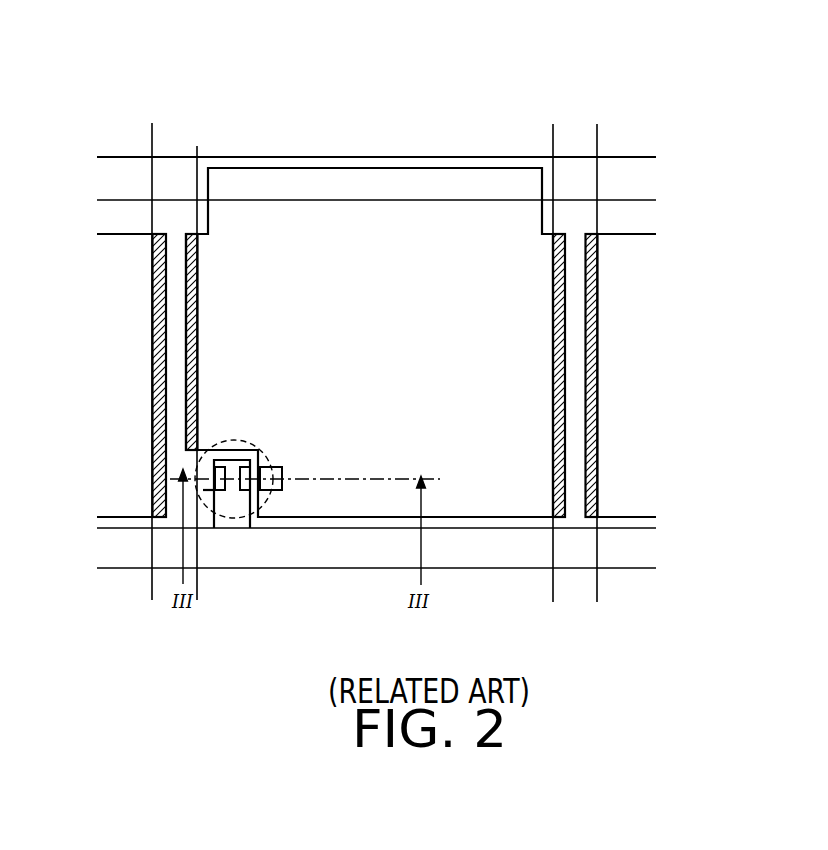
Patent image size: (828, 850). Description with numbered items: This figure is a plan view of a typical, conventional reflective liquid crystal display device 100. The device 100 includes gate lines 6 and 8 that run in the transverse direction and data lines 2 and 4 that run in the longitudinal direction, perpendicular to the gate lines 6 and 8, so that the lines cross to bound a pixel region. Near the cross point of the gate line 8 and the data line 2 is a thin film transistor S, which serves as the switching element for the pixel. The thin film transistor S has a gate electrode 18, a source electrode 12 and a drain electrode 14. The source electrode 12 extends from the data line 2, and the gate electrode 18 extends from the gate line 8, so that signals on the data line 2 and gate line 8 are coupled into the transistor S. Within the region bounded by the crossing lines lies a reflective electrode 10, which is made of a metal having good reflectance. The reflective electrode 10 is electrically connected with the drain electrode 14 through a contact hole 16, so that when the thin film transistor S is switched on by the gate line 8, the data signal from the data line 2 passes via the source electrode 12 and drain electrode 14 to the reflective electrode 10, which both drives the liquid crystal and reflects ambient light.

The reflective LCD device 100 is at (252, 90).
The data line 2 is at (171, 138).
The data line 4 is at (574, 136).
The gate line 6 is at (643, 178).
The gate line 8 is at (642, 548).
The reflective electrode 10 is at (383, 228).
The source electrode 12 is at (203, 490).
The drain electrode 14 is at (253, 494).
The contact hole 16 is at (270, 478).
The gate electrode 18 is at (233, 507).
The thin film transistor S is at (244, 440).